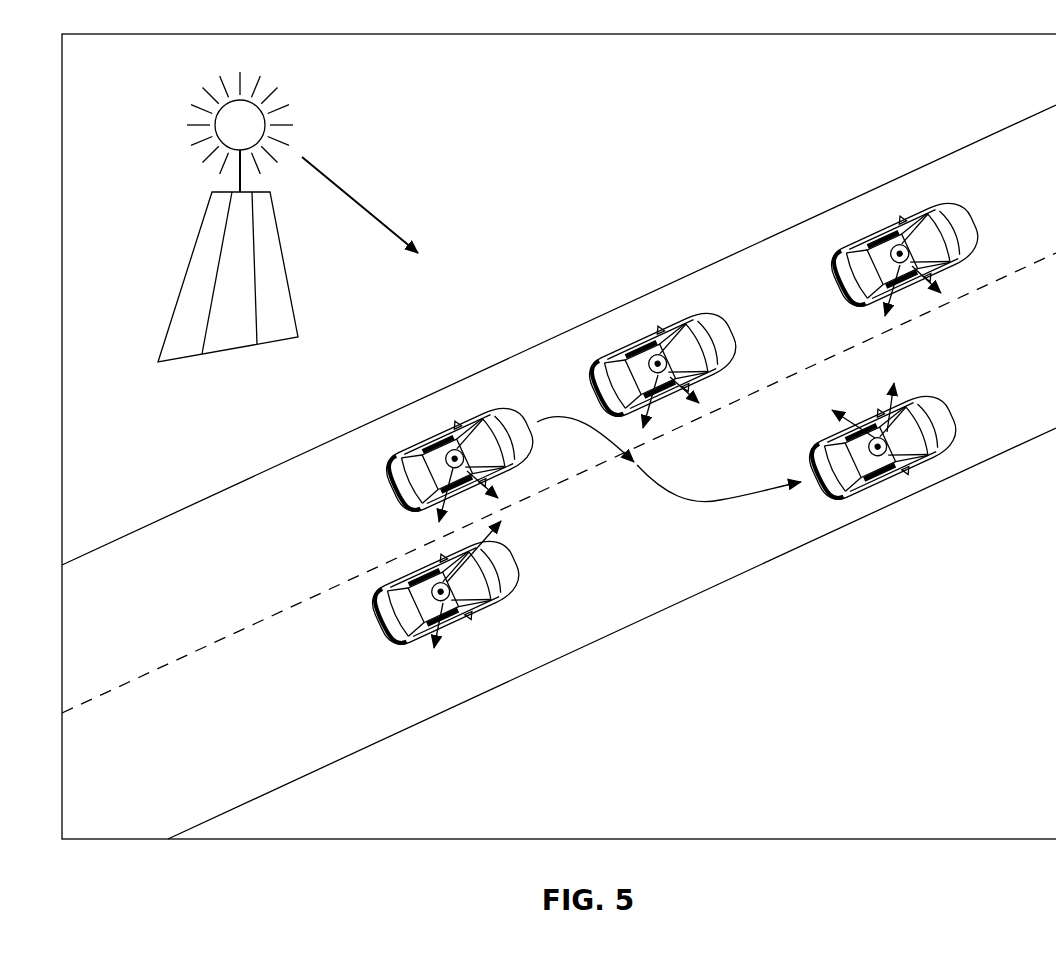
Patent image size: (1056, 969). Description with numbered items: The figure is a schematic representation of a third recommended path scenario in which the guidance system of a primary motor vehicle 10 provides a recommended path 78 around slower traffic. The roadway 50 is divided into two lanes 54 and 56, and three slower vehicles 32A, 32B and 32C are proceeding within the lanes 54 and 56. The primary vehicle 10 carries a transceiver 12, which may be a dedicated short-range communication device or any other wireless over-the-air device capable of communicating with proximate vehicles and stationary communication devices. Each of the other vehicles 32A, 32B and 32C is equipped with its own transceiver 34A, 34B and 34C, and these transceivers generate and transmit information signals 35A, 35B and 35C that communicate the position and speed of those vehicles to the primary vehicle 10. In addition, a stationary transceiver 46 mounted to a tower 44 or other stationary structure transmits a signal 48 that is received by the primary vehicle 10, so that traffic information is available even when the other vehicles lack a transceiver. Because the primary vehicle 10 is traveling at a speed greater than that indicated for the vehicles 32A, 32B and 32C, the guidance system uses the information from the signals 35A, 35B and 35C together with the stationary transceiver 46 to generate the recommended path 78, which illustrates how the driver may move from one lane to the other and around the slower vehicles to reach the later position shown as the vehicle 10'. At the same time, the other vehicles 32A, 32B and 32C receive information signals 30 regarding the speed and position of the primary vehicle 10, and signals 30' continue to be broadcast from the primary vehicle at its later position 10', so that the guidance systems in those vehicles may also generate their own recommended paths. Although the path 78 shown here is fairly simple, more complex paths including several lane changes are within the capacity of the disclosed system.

The motor vehicle 10 is at (460, 430).
The primary vehicle at later position 10' is at (883, 469).
The transceiver 12 is at (433, 453).
The information signals 30 is at (416, 502).
The information signals from primary vehicle at later position 30' is at (932, 401).
The vehicle 32A is at (655, 337).
The vehicle 32B is at (903, 231).
The vehicle 32C is at (442, 633).
The transceiver 34A is at (717, 334).
The transceiver 34B is at (975, 223).
The transceiver 34C is at (380, 623).
The information signal 35A is at (518, 571).
The information signal 35B is at (648, 414).
The information signal 35C is at (897, 302).
The tower 44 is at (185, 278).
The stationary transceiver 46 is at (238, 186).
The signal 48 is at (360, 198).
The road 50 is at (607, 637).
The lane 54 is at (156, 599).
The lane 56 is at (172, 744).
The recommended path 78 is at (720, 499).